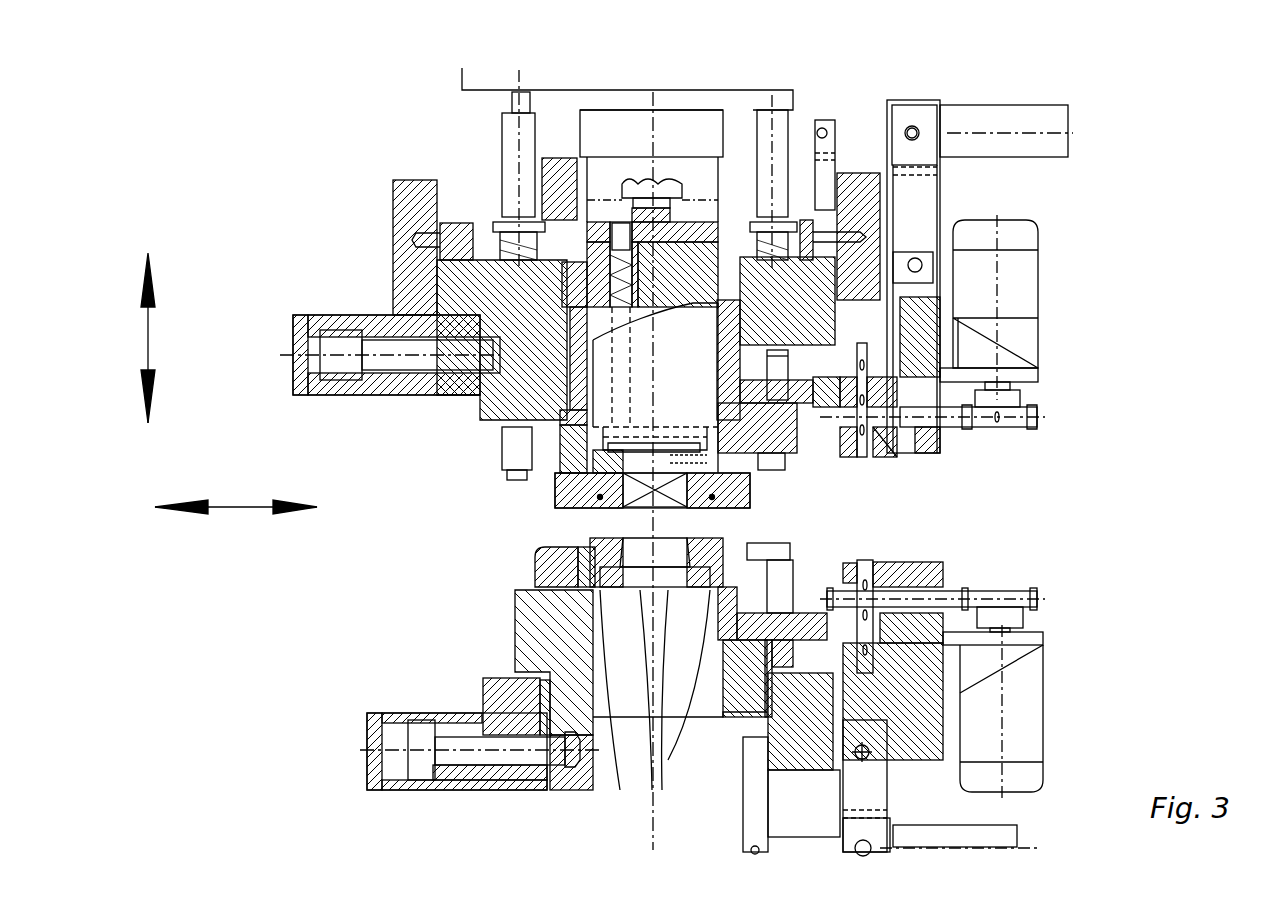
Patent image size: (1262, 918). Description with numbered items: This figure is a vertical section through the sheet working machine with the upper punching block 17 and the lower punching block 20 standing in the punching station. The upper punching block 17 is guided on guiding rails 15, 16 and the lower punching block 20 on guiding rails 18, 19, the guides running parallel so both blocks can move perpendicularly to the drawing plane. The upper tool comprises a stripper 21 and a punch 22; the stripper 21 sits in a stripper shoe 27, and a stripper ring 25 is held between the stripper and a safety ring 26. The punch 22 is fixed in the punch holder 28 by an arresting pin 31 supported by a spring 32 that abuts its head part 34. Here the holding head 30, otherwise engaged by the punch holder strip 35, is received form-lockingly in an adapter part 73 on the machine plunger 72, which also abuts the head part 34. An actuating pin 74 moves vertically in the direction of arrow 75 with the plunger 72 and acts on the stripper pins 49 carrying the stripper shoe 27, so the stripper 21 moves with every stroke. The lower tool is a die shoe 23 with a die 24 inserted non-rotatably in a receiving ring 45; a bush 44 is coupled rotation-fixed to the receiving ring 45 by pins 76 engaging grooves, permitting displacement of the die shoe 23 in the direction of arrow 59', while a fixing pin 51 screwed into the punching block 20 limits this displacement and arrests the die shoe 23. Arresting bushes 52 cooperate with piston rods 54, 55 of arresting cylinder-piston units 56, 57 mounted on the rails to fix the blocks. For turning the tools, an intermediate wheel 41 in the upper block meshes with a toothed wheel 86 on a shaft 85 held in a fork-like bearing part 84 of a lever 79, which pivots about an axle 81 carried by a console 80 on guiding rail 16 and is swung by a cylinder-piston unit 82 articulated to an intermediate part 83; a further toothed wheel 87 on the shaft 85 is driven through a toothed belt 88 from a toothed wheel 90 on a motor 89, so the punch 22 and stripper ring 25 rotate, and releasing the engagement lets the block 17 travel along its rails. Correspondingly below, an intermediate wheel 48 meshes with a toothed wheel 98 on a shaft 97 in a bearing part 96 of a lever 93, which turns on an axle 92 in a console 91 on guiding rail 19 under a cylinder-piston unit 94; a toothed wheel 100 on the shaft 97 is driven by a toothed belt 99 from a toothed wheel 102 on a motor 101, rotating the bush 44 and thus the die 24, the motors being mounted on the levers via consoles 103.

The guiding rail 15 is at (400, 270).
The guiding rail 16 is at (893, 245).
The upper punching block 17 is at (500, 395).
The guiding rail 18 is at (527, 780).
The guiding rail 19 is at (770, 715).
The lower punching block 20 is at (580, 790).
The stripper 21 is at (568, 500).
The punch 22 is at (520, 455).
The die shoe 23 is at (483, 677).
The die 24 is at (548, 570).
The stripper ring 25 is at (700, 500).
The safety ring 26 is at (585, 543).
The stripper shoe 27 is at (790, 440).
The punch holder 28 is at (697, 210).
The holding head 30 is at (650, 185).
The arresting pin 31 is at (585, 265).
The spring 32 is at (600, 275).
The head part 34 is at (515, 220).
The punch holder strip 35 is at (560, 190).
The intermediate wheel 41 is at (900, 333).
The bush 44 is at (620, 790).
The receiving ring 45 is at (535, 585).
The intermediate wheel 48 is at (805, 615).
The stripper pins 49 is at (455, 245).
The fixing pin 51 is at (700, 548).
The arresting bush 52 is at (480, 380).
The piston rod 54 is at (400, 362).
The piston rod 55 is at (483, 752).
The arresting cylinder-piston unit 56 is at (330, 330).
The arresting cylinder-piston unit 57 is at (418, 766).
The arrow 59' is at (236, 528).
The machine plunger 72 is at (662, 138).
The adapter part 73 is at (612, 185).
The actuating pin 74 is at (512, 140).
The arrow 75 is at (150, 340).
The pins 76 is at (657, 790).
The lever 79 is at (920, 198).
The console 80 is at (887, 247).
The axle 81 is at (915, 263).
The cylinder-piston unit 82 is at (1040, 122).
The intermediate part 83 is at (830, 150).
The fork-like bearing part 84 is at (900, 478).
The shaft 85 is at (870, 455).
The toothed wheel 86 is at (900, 363).
The toothed wheel 87 is at (943, 425).
The toothed belt 88 is at (900, 458).
The motor 89 is at (1012, 238).
The toothed wheel 90 is at (1018, 407).
The console 91 is at (835, 770).
The axle 92 is at (890, 735).
The lever 93 is at (960, 770).
The cylinder-piston unit 94 is at (960, 840).
The fork-like bearing part 96 is at (900, 575).
The shaft 97 is at (862, 565).
The toothed wheel 98 is at (1000, 627).
The toothed belt 99 is at (1020, 598).
The toothed wheel 100 is at (955, 585).
The motor 101 is at (1010, 675).
The toothed wheel 102 is at (1020, 585).
The console 103 is at (1013, 410).